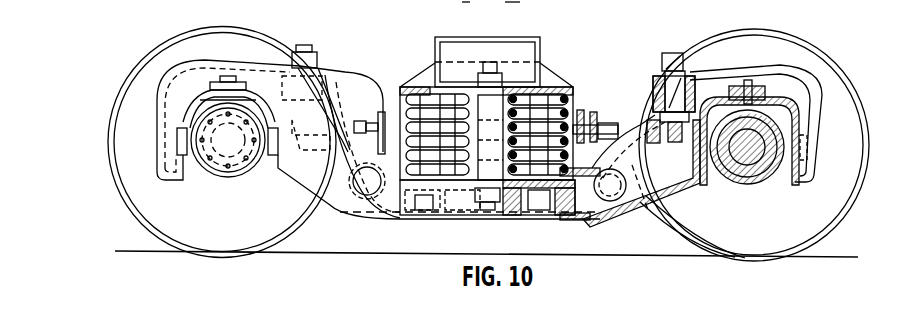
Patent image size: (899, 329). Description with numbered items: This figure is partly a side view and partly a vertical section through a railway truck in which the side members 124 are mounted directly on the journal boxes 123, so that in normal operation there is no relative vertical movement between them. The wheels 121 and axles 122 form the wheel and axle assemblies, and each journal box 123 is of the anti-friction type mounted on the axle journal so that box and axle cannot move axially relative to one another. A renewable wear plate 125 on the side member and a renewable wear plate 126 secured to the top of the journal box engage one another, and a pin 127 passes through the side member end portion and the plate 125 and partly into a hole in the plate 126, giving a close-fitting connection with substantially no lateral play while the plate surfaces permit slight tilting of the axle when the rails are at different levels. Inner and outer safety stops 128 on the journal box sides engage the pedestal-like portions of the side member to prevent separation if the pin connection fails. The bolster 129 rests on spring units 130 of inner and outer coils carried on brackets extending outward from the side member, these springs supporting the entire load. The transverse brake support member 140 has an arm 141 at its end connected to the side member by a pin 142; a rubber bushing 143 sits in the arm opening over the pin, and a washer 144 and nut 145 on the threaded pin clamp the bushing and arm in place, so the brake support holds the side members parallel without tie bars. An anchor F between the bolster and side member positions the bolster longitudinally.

The wheel 121 is at (206, 142).
The axle 122 is at (747, 147).
The journal box 123 is at (218, 176).
The side member 124 is at (383, 222).
The renewable wear plate 125 is at (773, 99).
The renewable wear plate 126 is at (770, 102).
The pin 127 is at (749, 86).
The safety stop 128 is at (177, 142).
The bolster 129 is at (546, 80).
The spring unit 130 is at (575, 100).
The brake support member 140 is at (606, 202).
The arm 141 is at (360, 76).
The pin 142 is at (689, 91).
The rubber bushing 143 is at (690, 72).
The washer 144 is at (660, 55).
The nut 145 is at (688, 55).
The anchor F is at (607, 110).